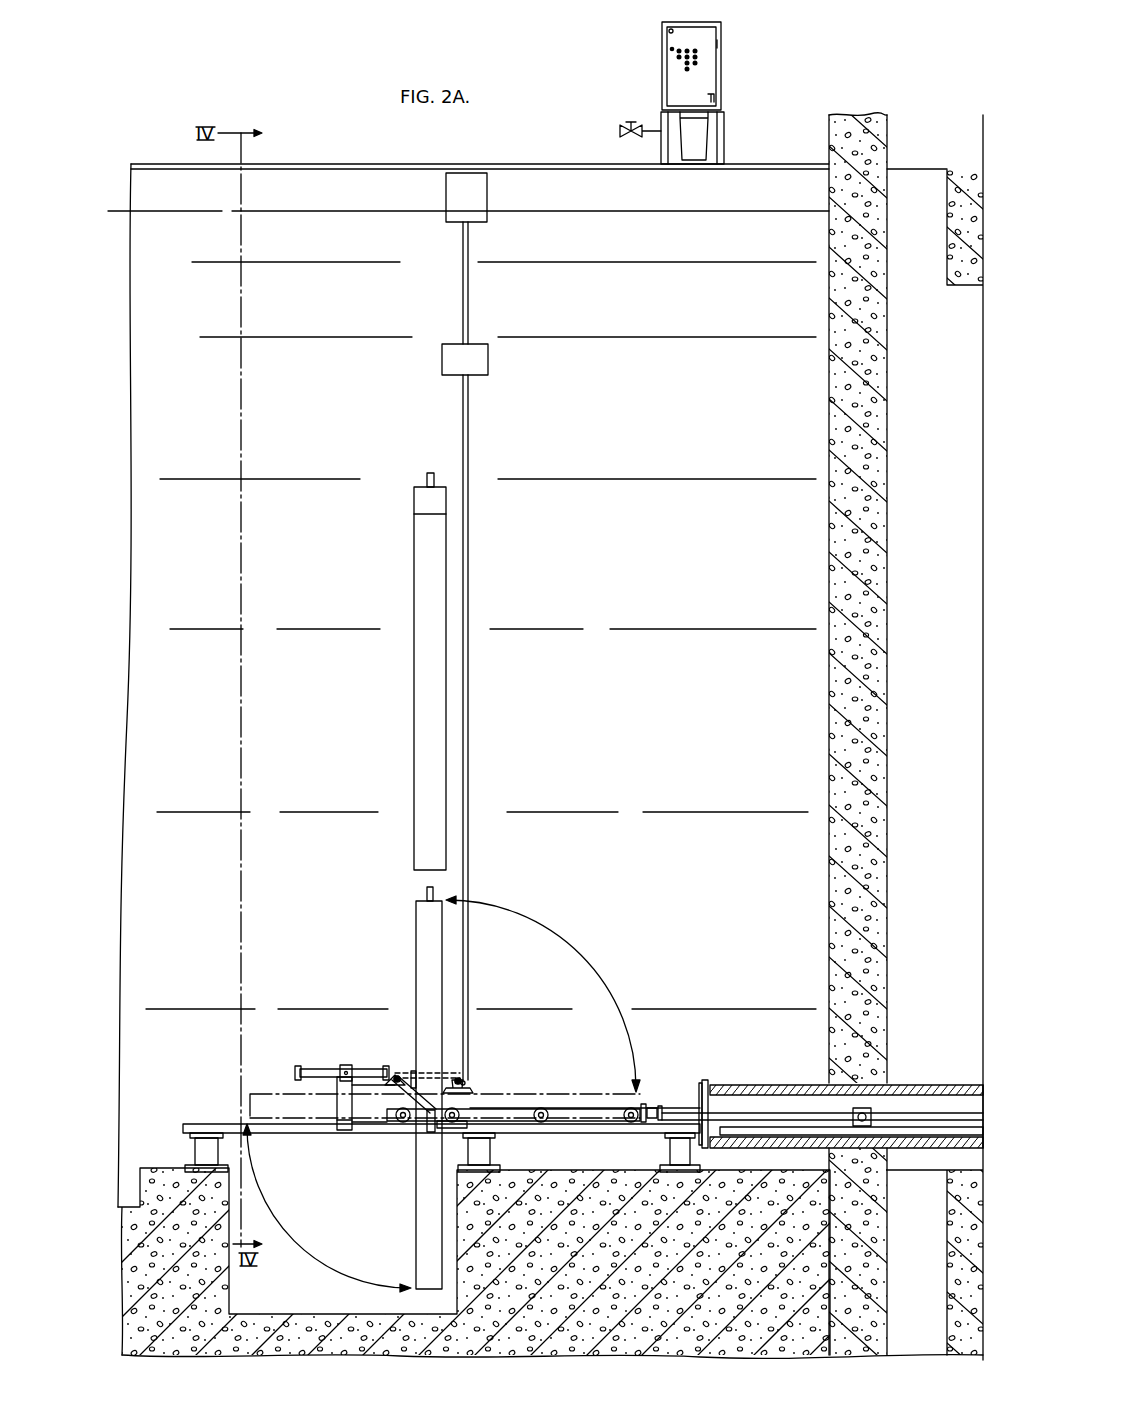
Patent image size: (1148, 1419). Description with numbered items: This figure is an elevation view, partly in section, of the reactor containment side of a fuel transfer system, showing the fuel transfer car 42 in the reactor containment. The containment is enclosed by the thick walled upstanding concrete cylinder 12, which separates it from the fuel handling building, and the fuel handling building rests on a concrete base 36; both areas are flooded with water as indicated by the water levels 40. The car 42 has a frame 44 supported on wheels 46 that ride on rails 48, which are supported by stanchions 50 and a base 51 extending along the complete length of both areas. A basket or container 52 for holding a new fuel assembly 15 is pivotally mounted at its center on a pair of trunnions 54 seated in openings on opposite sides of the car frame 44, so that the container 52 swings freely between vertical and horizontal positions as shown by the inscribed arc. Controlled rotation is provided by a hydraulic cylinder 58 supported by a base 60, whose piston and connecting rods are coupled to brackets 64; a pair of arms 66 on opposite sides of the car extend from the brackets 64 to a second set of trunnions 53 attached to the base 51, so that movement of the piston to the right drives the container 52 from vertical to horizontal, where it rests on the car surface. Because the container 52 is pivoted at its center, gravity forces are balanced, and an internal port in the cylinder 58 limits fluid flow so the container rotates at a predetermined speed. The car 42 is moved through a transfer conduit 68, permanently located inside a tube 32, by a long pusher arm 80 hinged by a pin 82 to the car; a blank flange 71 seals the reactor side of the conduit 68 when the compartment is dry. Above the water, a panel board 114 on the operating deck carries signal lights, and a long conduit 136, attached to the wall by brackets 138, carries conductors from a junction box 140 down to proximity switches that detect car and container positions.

The concrete cylinder 12 is at (831, 728).
The new fuel assembly 15 is at (414, 690).
The tube 32 is at (930, 1085).
The concrete base 36 is at (152, 1168).
The water level 40 is at (366, 211).
The car 42 is at (483, 1061).
The frame 44 is at (520, 1108).
The wheels 46 is at (392, 1131).
The rails 48 is at (408, 1128).
The stanchions 50 is at (490, 1146).
The base 51 is at (570, 1133).
The container 52 is at (416, 940).
The second set of trunnions 53 is at (441, 1131).
The trunnions 54 is at (432, 1134).
The hydraulic cylinder 58 is at (368, 1082).
The base 60 is at (342, 1083).
The brackets 64 is at (396, 1077).
The arms 66 is at (422, 1080).
The transfer conduit 68 is at (780, 1092).
The blank flange 71 is at (705, 1082).
The pusher arm 80 is at (686, 1113).
The pin 82 is at (653, 1101).
The panel board 114 is at (662, 61).
The conduit 136 is at (469, 440).
The brackets 138 is at (488, 364).
The junction box 140 is at (488, 195).